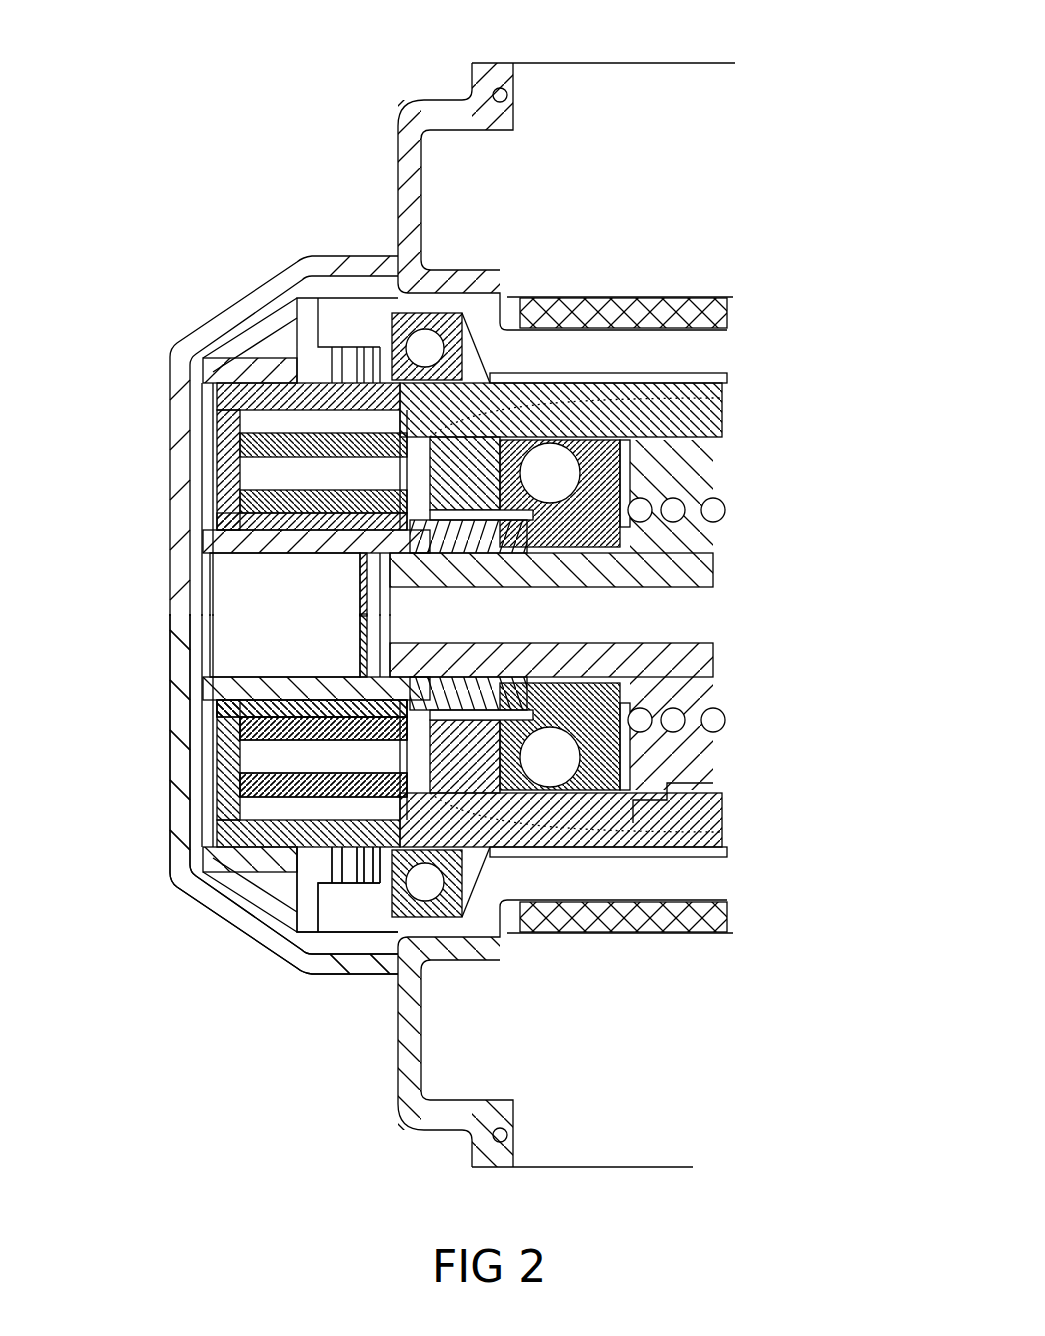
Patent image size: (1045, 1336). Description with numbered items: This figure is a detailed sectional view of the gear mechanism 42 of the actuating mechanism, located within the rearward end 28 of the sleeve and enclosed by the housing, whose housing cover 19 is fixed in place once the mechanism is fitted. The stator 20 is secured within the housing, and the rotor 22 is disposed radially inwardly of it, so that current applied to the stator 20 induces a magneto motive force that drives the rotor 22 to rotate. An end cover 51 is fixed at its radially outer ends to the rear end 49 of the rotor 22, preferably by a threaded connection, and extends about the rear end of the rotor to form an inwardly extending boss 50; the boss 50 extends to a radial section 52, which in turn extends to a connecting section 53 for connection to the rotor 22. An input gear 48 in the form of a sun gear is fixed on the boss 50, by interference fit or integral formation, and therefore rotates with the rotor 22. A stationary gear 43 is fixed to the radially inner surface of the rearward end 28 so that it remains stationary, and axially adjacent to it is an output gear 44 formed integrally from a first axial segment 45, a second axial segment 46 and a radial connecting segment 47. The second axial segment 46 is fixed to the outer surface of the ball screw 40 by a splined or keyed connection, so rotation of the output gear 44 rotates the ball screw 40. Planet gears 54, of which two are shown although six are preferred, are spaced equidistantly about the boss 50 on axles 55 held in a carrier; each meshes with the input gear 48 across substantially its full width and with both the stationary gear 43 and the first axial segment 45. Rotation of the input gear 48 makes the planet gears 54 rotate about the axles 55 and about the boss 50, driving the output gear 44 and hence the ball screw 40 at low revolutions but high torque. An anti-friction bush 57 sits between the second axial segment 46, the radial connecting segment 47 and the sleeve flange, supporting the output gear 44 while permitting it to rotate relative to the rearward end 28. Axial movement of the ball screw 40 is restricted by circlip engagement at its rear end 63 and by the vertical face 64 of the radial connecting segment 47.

The housing cover 19 is at (178, 700).
The stator 20 is at (607, 119).
The rotor 22 is at (655, 315).
The rearward end 28 is at (484, 330).
The ball screw 40 is at (673, 560).
The gear mechanism 42 is at (250, 473).
The stationary gear 43 is at (227, 403).
The output gear 44 is at (355, 335).
The first axial segment 45 is at (275, 370).
The second axial segment 46 is at (500, 547).
The radial connecting segment 47 is at (435, 458).
The input gear 48 is at (247, 528).
The rear end 49 is at (378, 303).
The boss 50 is at (240, 560).
The end cover 51 is at (243, 862).
The radial section 52 is at (202, 483).
The connecting section 53 is at (265, 358).
The planet gears 54 is at (330, 510).
The axles 55 is at (298, 940).
The anti-friction bush 57 is at (455, 520).
The rear end 63 is at (390, 631).
The vertical face 64 is at (337, 845).